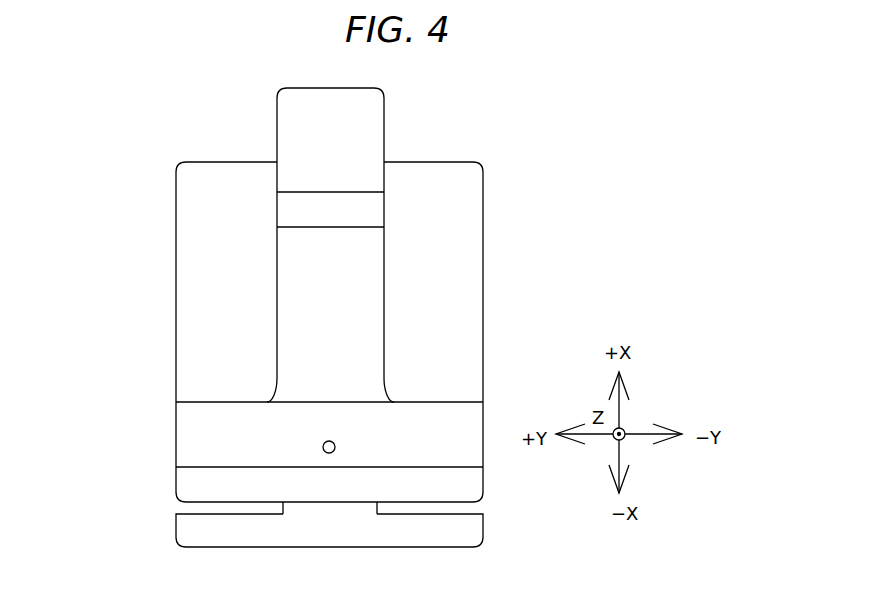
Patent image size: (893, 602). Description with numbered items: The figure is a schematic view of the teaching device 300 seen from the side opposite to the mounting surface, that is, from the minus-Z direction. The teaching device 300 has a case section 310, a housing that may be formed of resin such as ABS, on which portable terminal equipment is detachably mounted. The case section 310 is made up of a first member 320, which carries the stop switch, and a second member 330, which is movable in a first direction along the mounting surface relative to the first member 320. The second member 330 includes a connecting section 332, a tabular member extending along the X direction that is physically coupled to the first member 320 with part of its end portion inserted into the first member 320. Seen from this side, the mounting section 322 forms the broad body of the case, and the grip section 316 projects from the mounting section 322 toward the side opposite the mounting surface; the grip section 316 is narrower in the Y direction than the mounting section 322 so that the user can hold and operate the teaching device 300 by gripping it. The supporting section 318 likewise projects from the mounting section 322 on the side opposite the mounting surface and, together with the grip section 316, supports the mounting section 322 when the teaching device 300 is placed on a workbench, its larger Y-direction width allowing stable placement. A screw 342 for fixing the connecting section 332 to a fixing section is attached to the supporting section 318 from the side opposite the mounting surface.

The teaching device 300 is at (618, 132).
The case section 310 is at (340, 321).
The first member 320 is at (479, 164).
The second member 330 is at (482, 532).
The mounting section 322 is at (223, 190).
The grip section 316 is at (275, 338).
The supporting section 318 is at (203, 435).
The connecting section 332 is at (317, 507).
The screw 342 is at (324, 442).